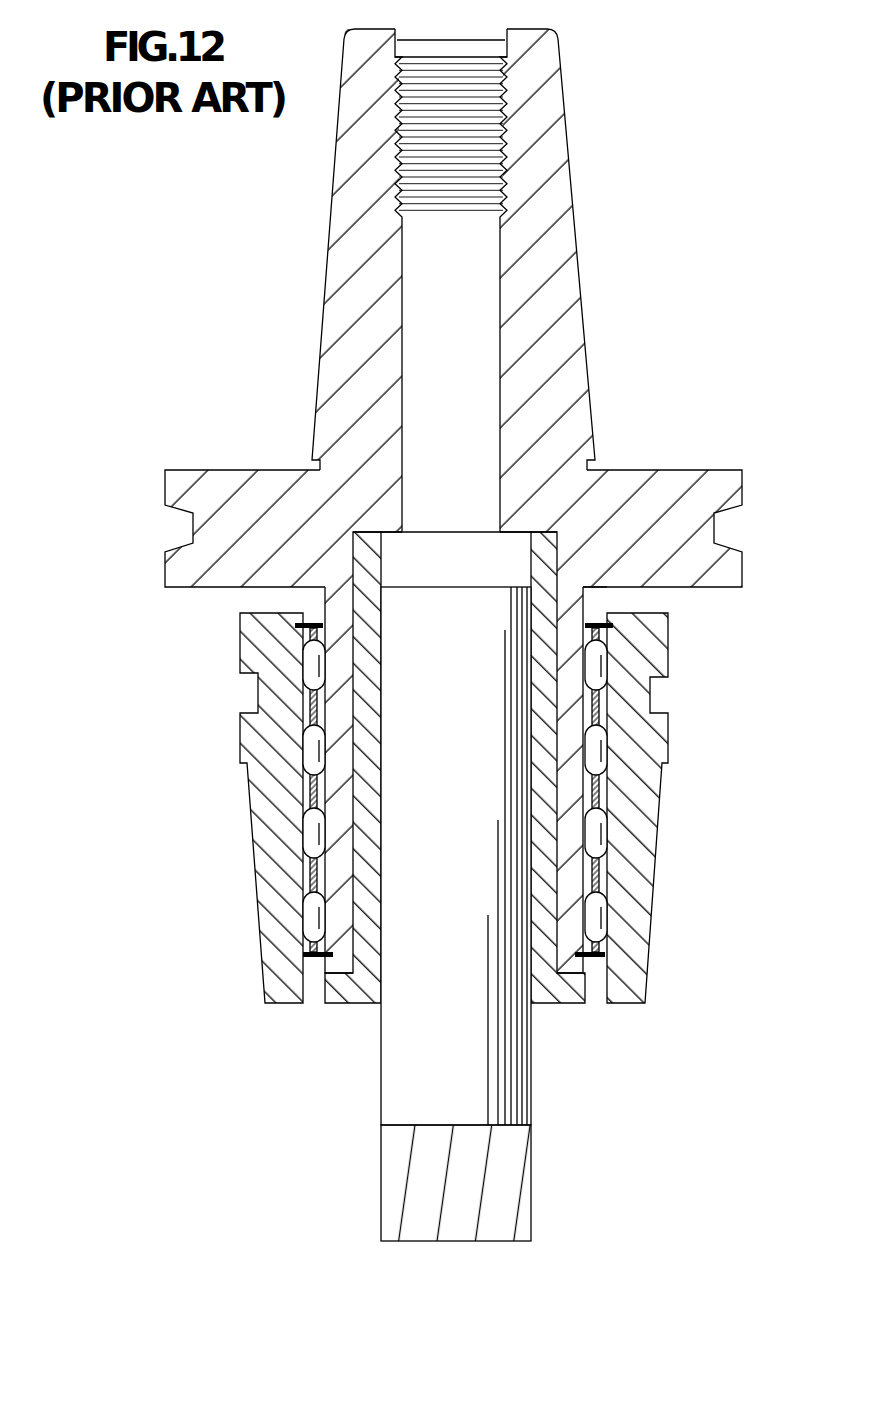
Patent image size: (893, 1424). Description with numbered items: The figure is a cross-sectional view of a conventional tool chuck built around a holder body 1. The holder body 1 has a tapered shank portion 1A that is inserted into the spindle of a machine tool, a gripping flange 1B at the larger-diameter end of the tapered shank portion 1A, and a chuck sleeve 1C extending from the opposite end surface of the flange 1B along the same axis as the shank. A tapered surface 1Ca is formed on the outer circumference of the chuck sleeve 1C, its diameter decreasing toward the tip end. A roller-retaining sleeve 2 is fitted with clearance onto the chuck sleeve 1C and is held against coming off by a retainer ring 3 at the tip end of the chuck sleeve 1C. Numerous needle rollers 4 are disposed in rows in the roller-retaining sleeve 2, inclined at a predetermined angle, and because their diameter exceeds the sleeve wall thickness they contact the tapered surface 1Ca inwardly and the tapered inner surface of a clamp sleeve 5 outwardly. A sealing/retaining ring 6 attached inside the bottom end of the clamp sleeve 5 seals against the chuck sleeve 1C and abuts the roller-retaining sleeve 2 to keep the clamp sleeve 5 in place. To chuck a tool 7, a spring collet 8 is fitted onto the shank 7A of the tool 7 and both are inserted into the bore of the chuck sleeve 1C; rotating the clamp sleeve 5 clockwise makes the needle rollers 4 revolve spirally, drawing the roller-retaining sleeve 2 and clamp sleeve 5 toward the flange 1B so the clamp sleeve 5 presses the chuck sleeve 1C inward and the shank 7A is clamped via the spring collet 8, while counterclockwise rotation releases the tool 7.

The holder body 1 is at (468, 501).
The tapered shank portion 1A is at (568, 387).
The gripping flange 1B is at (655, 478).
The chuck sleeve 1C is at (570, 842).
The tapered surface 1Ca is at (587, 597).
The roller-retaining sleeve 2 is at (317, 790).
The retainer ring 3 is at (597, 960).
The needle rollers 4 is at (307, 840).
The clamp sleeve 5 is at (632, 948).
The sealing/retaining ring 6 is at (605, 625).
The tool 7 is at (409, 914).
The shank 7A is at (403, 1093).
The spring collet 8 is at (542, 878).